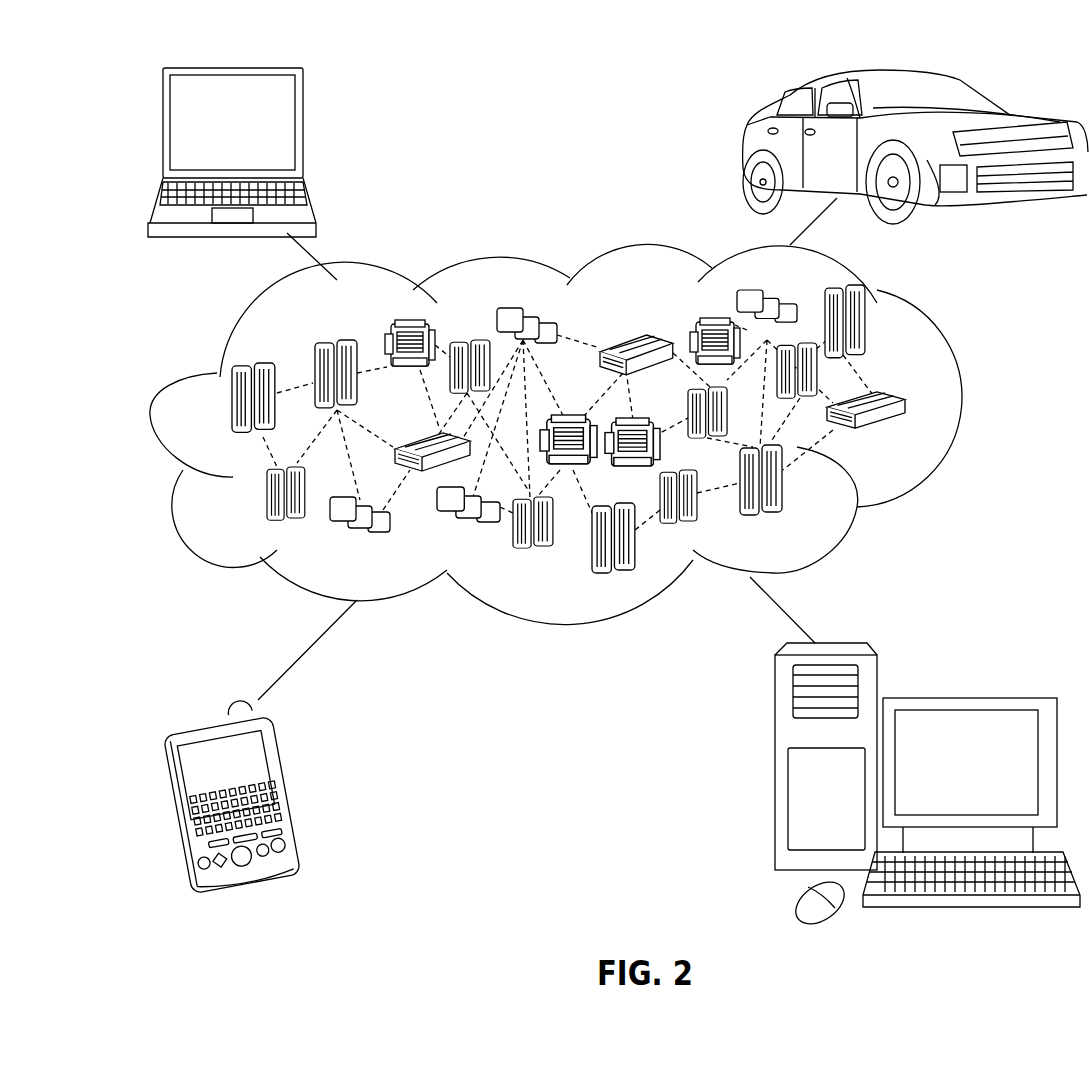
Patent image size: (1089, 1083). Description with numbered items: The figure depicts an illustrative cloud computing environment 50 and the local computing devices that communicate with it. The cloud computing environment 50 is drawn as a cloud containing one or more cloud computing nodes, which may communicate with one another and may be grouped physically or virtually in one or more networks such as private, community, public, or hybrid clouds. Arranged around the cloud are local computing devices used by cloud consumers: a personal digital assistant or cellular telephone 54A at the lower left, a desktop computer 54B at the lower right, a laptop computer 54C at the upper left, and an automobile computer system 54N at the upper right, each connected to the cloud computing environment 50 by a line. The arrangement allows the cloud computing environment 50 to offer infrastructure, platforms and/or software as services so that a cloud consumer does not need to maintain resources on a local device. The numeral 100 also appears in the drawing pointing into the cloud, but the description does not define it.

The laptop computer 54C is at (303, 132).
The automobile computer system 54N is at (745, 152).
The personal digital assistant or cellular telephone 54A is at (287, 797).
The desktop computer 54B is at (965, 695).
The cloud computing environment 50 is at (965, 405).
The cloud computing nodes 100 is at (905, 438).